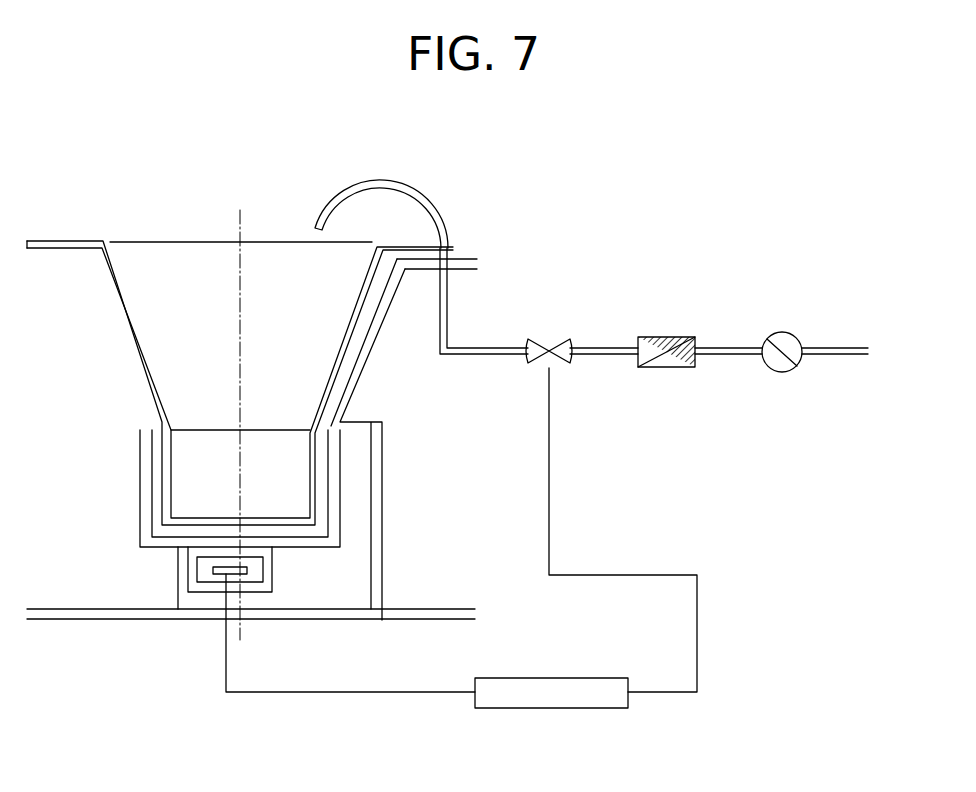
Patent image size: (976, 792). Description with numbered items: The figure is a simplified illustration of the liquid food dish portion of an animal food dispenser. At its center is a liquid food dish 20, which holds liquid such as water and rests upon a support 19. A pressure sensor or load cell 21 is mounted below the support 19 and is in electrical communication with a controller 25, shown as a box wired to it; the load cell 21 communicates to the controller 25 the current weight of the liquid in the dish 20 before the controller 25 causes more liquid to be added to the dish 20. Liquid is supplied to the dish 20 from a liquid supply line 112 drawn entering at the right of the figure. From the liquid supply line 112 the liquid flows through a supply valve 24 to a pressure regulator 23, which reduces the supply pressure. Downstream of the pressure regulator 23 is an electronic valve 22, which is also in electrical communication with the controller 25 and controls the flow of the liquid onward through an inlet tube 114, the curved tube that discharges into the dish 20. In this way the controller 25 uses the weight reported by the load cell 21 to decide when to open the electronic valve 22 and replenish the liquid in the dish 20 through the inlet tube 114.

The support 19 is at (315, 543).
The liquid food dish 20 is at (410, 245).
The load cell 21 is at (252, 574).
The electronic valve 22 is at (552, 340).
The pressure regulator 23 is at (650, 367).
The supply valve 24 is at (778, 333).
The controller 25 is at (527, 708).
The liquid supply line 112 is at (845, 347).
The inlet tube 114 is at (350, 185).